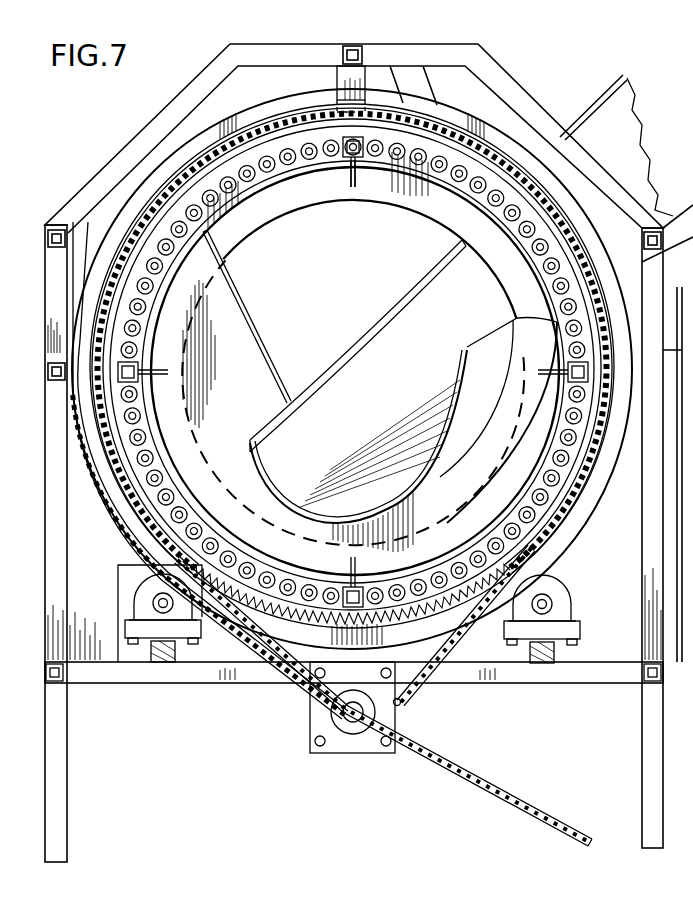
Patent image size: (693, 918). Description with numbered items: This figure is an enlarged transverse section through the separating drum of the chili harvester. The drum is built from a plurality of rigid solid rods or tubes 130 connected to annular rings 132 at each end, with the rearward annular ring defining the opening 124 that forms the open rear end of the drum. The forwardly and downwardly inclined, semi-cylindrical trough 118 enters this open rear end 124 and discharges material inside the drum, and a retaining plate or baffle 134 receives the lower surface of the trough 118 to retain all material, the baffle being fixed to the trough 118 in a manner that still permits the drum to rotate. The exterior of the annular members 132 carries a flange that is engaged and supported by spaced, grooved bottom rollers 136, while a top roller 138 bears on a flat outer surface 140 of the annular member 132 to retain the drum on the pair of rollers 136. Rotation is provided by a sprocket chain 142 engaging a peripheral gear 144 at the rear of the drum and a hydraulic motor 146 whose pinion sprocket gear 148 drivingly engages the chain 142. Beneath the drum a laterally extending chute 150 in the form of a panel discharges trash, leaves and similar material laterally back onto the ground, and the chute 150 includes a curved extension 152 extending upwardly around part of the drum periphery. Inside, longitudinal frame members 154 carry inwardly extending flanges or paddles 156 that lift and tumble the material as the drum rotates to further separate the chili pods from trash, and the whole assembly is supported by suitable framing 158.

The trough 118 is at (362, 345).
The opening 124 is at (262, 228).
The rods or tubes 130 is at (468, 160).
The annular rings 132 is at (517, 157).
The retaining plate or baffle 134 is at (257, 378).
The bottom rollers 136 is at (140, 600).
The top roller 138 is at (366, 106).
The flat outer surface 140 is at (257, 143).
The sprocket chain 142 is at (447, 648).
The peripheral gear 144 is at (298, 618).
The hydraulic motor 146 is at (343, 727).
The pinion sprocket gear 148 is at (400, 703).
The laterally extending chute 150 is at (513, 792).
The curved extension 152 is at (103, 507).
The longitudinal frame members 154 is at (337, 157).
The flanges or paddles 156 is at (353, 186).
The framing 158 is at (68, 674).